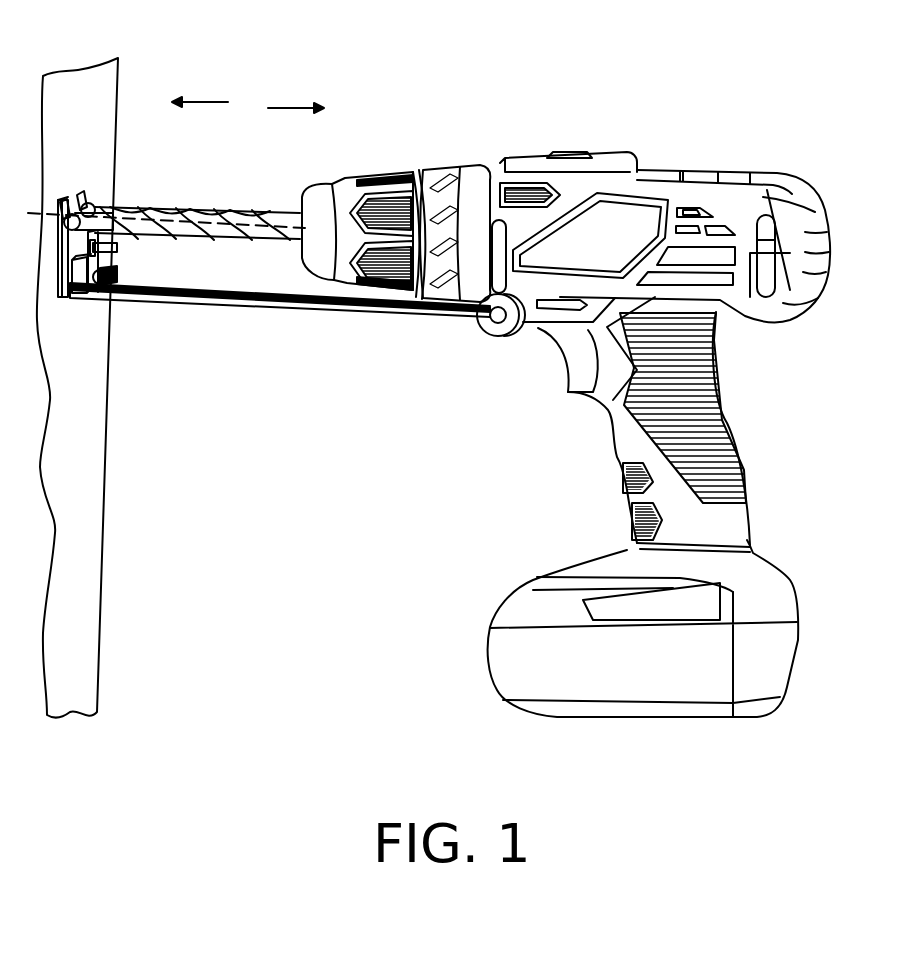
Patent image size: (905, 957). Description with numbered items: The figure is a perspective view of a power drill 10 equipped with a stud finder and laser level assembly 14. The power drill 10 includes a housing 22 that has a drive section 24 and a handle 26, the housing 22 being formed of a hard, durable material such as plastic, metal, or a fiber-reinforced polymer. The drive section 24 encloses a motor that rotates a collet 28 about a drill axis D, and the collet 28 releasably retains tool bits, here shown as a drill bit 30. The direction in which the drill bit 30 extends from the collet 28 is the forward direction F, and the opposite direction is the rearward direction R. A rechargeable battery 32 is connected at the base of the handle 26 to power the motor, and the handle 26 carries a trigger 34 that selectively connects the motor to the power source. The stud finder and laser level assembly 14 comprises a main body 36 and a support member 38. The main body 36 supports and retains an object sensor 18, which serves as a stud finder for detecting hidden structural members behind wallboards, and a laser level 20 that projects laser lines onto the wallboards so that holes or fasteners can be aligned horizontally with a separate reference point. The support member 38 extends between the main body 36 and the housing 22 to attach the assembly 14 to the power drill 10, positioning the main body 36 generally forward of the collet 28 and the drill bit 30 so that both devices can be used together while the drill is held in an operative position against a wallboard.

The power drill 10 is at (566, 397).
The stud finder and laser level assembly 14 is at (274, 269).
The object sensor 18 is at (112, 262).
The laser level 20 is at (90, 205).
The housing 22 is at (660, 160).
The drive section 24 is at (500, 170).
The handle 26 is at (742, 437).
The collet 28 is at (380, 172).
The drill bit 30 is at (250, 208).
The rechargeable battery 32 is at (487, 650).
The trigger 34 is at (568, 360).
The main body 36 is at (97, 392).
The support member 38 is at (306, 320).
The drill axis D is at (207, 214).
The forward direction F is at (200, 92).
The rearward direction R is at (296, 95).